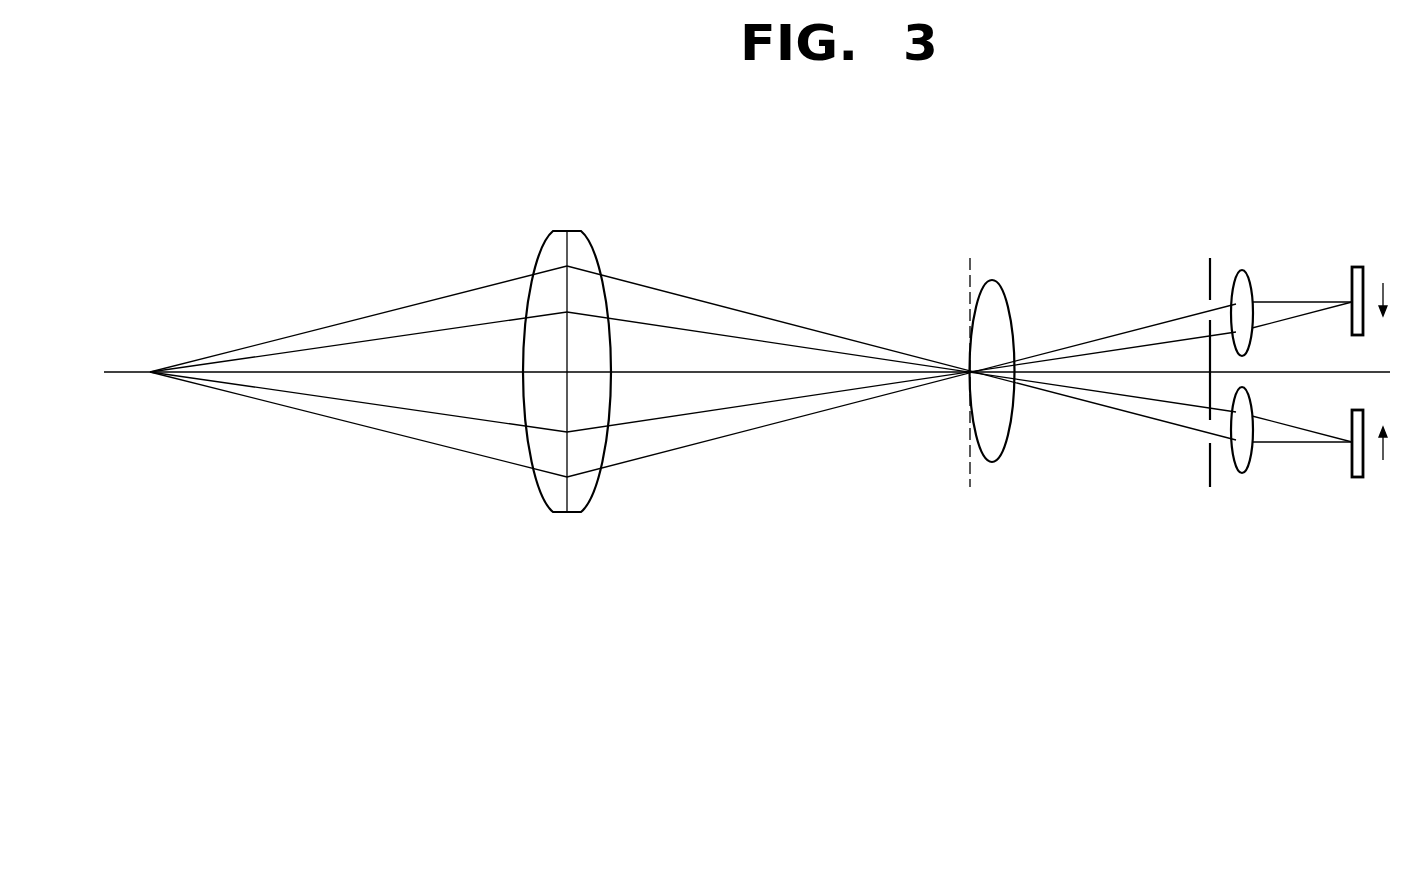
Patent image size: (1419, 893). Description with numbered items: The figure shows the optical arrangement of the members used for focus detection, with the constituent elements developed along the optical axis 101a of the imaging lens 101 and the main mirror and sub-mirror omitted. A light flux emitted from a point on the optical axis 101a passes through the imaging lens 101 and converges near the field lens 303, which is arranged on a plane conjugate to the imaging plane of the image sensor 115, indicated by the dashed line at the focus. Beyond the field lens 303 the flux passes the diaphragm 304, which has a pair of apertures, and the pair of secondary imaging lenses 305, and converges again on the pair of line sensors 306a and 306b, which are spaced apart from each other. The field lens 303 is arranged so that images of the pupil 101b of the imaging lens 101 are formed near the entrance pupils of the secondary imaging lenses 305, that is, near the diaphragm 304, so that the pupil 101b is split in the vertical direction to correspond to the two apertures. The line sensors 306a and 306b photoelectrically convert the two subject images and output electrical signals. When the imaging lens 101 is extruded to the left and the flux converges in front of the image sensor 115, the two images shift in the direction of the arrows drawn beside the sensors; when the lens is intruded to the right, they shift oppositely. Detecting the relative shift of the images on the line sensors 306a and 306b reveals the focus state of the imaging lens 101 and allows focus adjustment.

The imaging lens 101 is at (558, 231).
The optical axis 101a is at (435, 372).
The pupil 101b is at (568, 297).
The image sensor 115 is at (968, 270).
The field lens 303 is at (992, 280).
The diaphragm 304 is at (1207, 272).
The secondary imaging lenses 305 is at (1244, 270).
The line sensor 306a is at (1357, 266).
The line sensor 306b is at (1358, 480).